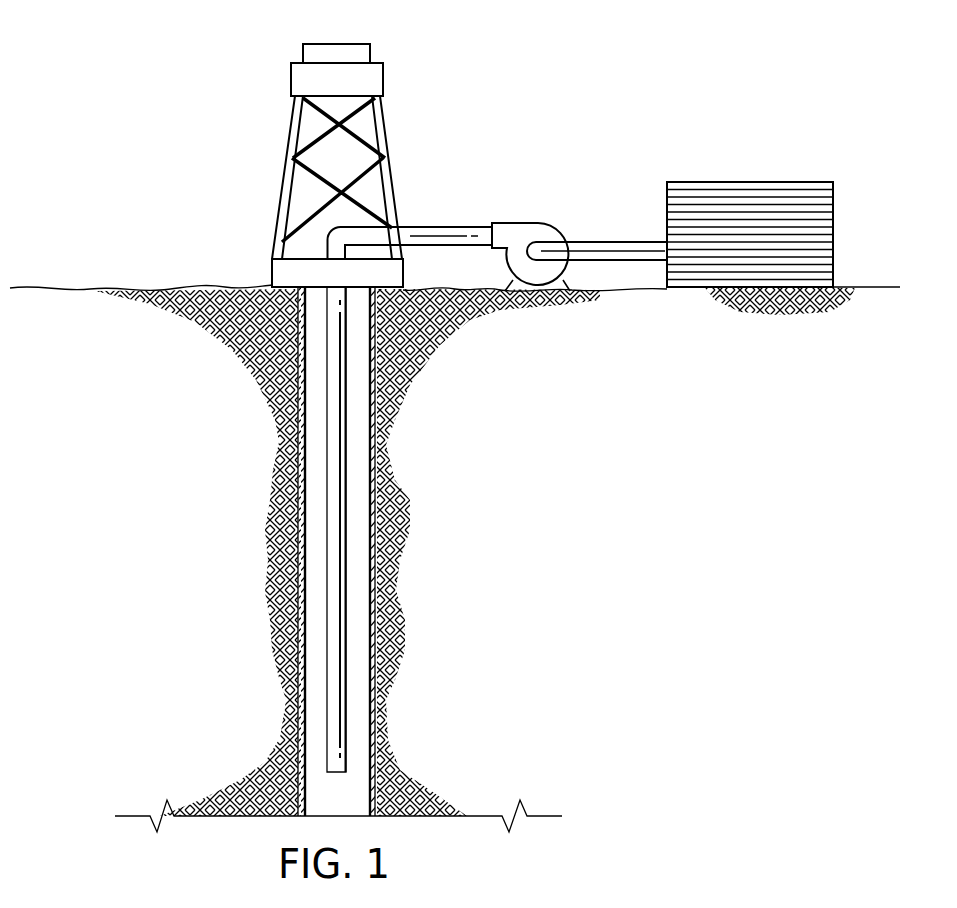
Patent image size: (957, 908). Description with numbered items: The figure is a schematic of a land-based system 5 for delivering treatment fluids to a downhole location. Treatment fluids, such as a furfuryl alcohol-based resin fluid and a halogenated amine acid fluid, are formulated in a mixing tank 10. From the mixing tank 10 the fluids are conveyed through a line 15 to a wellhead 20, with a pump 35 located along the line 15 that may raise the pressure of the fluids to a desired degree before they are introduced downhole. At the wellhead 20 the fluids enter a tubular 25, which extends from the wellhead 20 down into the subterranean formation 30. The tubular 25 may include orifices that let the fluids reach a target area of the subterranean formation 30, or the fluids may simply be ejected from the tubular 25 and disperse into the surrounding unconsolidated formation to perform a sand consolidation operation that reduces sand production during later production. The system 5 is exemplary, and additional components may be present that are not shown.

The system 5 is at (217, 68).
The mixing tank 10 is at (750, 182).
The line 15 is at (443, 228).
The wellhead 20 is at (272, 273).
The tubular 25 is at (328, 680).
The subterranean formation 30 is at (235, 543).
The pump 35 is at (513, 223).